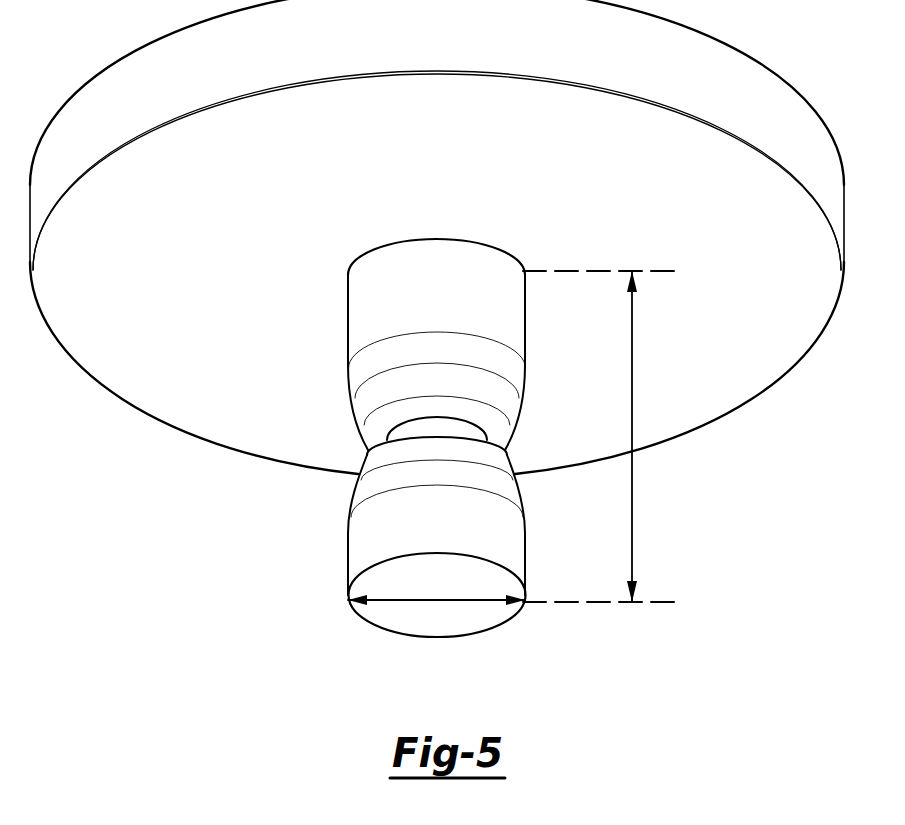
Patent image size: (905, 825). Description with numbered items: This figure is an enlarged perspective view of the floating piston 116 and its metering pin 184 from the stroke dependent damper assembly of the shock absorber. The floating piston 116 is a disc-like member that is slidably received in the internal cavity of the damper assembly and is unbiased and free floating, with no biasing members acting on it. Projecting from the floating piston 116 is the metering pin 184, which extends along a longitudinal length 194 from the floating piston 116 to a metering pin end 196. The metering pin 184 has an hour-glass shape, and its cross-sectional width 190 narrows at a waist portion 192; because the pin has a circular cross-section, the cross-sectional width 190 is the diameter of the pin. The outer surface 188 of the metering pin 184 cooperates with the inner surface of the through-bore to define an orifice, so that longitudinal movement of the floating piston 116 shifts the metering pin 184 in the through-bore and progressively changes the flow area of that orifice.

The floating piston 116 is at (222, 65).
The metering pin 184 is at (384, 467).
The outer surface 188 is at (381, 360).
The cross-sectional width 190 is at (400, 600).
The waist portion 192 is at (395, 437).
The longitudinal length 194 is at (632, 503).
The metering pin end 196 is at (448, 613).